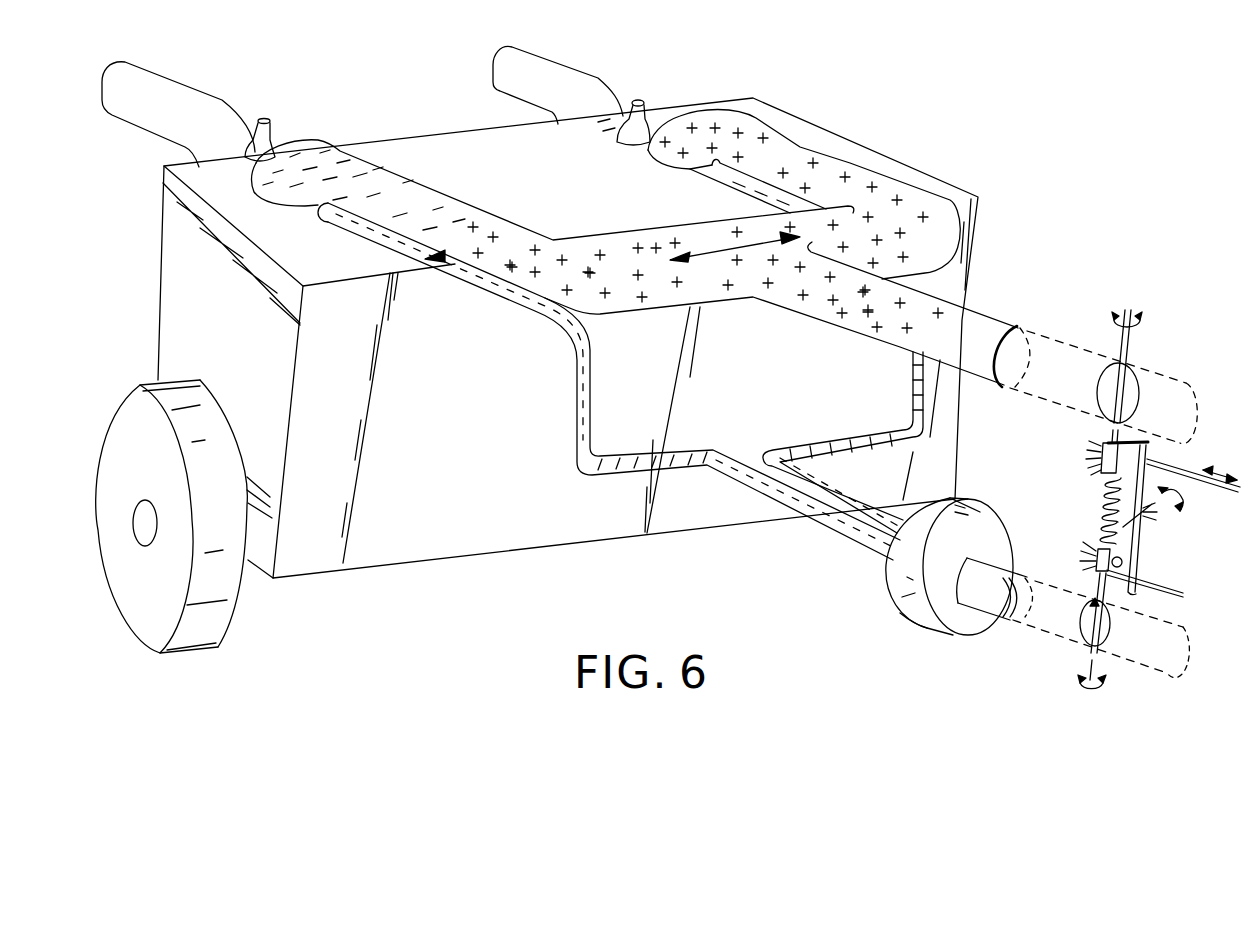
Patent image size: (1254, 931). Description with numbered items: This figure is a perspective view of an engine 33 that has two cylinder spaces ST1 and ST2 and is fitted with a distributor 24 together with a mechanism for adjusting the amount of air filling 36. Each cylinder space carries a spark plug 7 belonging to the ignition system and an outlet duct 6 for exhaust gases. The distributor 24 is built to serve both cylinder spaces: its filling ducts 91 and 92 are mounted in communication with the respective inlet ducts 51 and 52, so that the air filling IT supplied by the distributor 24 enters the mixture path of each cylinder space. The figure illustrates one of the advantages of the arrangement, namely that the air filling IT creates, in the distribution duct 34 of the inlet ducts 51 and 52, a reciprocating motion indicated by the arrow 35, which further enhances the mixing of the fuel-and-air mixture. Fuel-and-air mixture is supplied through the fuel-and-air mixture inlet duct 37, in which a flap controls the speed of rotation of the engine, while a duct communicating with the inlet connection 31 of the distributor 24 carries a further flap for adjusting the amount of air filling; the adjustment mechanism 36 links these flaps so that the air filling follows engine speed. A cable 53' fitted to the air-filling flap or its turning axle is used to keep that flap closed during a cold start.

The outlet duct 6 is at (177, 97).
The spark plug 7 is at (255, 124).
The engine 33 is at (434, 128).
The inlet duct 51 is at (358, 167).
The inlet duct 52 is at (830, 170).
The cylinder space ST1 is at (302, 131).
The cylinder space ST2 is at (642, 92).
The air filling IT is at (373, 212).
The filling duct 91 is at (473, 292).
The filling duct 92 is at (753, 187).
The distribution duct 34 is at (713, 293).
The arrow 35 is at (717, 250).
The fuel-and-air mixture inlet duct 37 is at (992, 330).
The air filling adjustment mechanism 36 is at (1094, 339).
The distributor 24 is at (952, 608).
The inlet connection 31 is at (996, 595).
The cable 53' is at (1170, 582).